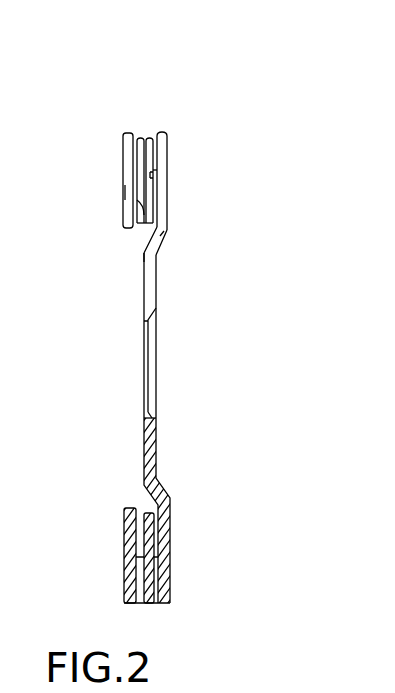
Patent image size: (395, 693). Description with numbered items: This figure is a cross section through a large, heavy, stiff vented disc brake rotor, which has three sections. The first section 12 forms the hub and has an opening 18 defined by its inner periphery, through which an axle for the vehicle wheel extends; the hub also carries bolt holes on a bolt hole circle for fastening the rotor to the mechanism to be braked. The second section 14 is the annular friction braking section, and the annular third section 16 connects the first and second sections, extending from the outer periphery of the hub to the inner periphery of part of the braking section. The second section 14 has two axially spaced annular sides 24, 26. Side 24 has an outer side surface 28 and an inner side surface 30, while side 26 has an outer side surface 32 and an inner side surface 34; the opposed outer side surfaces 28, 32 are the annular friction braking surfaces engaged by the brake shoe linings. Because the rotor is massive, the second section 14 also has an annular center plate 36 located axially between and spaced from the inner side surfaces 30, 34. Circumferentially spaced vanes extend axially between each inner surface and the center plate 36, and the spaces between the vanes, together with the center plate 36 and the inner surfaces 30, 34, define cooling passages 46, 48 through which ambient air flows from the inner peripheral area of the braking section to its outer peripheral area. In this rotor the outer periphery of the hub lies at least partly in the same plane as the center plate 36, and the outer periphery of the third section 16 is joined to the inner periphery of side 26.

The first section 12 is at (159, 272).
The second section 14 is at (169, 134).
The third section 16 is at (165, 244).
The opening 18 is at (135, 178).
The annular side 24 is at (124, 136).
The annular side 26 is at (147, 136).
The outer side surface 28 is at (125, 190).
The inner side surface 30 is at (137, 201).
The outer side surface 32 is at (167, 160).
The inner side surface 34 is at (153, 175).
The annular center plate 36 is at (135, 136).
The cooling passage 46 is at (144, 252).
The cooling passage 48 is at (165, 235).